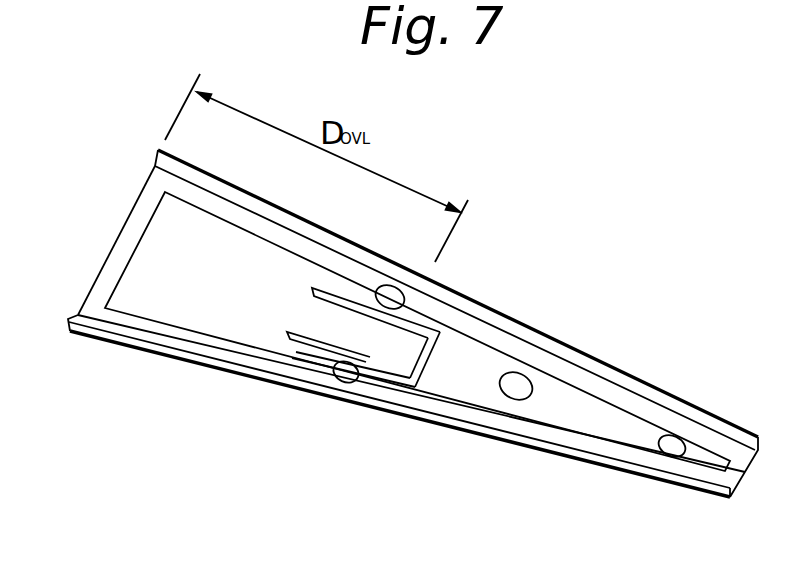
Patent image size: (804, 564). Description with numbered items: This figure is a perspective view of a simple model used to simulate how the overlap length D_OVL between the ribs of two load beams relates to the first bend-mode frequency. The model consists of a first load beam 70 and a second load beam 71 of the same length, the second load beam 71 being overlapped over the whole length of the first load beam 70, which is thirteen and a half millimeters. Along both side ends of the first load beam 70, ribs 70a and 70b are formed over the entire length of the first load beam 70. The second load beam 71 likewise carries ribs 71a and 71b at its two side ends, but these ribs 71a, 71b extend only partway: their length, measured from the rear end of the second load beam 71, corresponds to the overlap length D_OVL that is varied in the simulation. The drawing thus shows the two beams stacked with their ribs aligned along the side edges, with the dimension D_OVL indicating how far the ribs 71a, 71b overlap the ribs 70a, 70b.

The first load beam 70 is at (587, 422).
The rib 70a is at (598, 368).
The rib 70b is at (630, 470).
The second load beam 71 is at (443, 405).
The rib 71a is at (398, 276).
The rib 71b is at (292, 372).